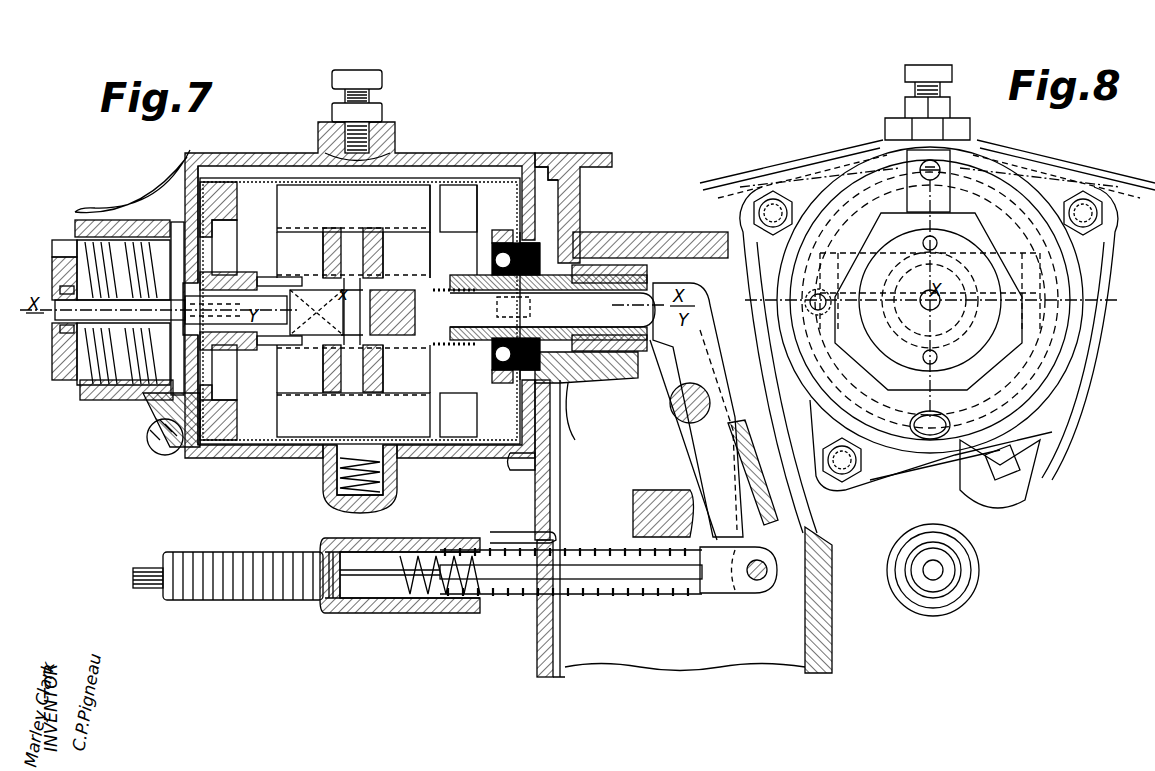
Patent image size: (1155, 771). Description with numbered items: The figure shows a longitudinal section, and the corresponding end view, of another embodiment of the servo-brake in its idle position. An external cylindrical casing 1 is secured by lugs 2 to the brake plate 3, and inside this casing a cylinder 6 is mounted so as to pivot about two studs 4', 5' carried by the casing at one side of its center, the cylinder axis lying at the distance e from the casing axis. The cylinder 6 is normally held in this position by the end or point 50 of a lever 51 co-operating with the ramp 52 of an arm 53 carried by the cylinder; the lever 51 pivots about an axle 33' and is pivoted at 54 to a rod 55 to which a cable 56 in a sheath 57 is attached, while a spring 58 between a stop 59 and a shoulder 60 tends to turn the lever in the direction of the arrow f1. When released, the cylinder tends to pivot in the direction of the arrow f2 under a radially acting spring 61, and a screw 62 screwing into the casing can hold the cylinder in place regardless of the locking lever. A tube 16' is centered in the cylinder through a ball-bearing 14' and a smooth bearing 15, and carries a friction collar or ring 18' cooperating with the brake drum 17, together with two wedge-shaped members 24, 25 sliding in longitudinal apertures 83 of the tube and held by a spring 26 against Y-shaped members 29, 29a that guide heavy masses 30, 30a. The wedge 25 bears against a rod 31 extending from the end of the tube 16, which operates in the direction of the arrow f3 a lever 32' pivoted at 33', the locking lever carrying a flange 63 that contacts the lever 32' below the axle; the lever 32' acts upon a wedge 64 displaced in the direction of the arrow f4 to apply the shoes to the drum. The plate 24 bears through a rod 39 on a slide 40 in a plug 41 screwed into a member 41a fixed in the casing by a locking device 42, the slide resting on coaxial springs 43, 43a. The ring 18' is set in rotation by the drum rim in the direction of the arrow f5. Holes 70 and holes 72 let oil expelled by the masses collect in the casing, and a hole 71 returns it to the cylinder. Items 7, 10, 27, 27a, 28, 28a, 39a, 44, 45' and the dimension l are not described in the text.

In FIG. 7, the external cylindrical casing 1 is at (453, 158).
In FIG. 8, the external cylindrical casing 1 is at (1086, 373).
In FIG. 7, the lugs 2 is at (517, 480).
In FIG. 8, the lugs 2 is at (882, 465).
In FIG. 7, the brake plate 3 is at (575, 160).
In FIG. 7, the stud 4' is at (120, 310).
In FIG. 7, the stud 5' is at (558, 310).
In FIG. 7, the cylinder 6 is at (422, 179).
In FIG. 8, the fitting 7 is at (966, 465).
In FIG. 7, the central rod 10 is at (351, 335).
In FIG. 7, the ball-bearing 14' is at (473, 410).
In FIG. 7, the bearing 15 is at (225, 288).
In FIG. 7, the tube 16 is at (236, 308).
In FIG. 7, the tube 16' is at (581, 241).
In FIG. 7, the brake drum 17 is at (673, 240).
In FIG. 8, the brake drum 17 is at (1007, 193).
In FIG. 7, the friction collar or ring 18' is at (614, 274).
In FIG. 8, the friction collar or ring 18' is at (958, 300).
In FIG. 7, the wedge-shaped member 24 is at (250, 318).
In FIG. 7, the wedge-shaped member 25 is at (542, 307).
In FIG. 7, the spring 26 is at (466, 330).
In FIG. 7, the crank block 27 is at (290, 290).
In FIG. 7, the lower crank block 27a is at (318, 330).
In FIG. 7, the guide block 28 is at (428, 272).
In FIG. 7, the lower guide block 28a is at (425, 360).
In FIG. 7, the Y-shaped member 29 is at (396, 205).
In FIG. 7, the Y-shaped member 29a is at (402, 418).
In FIG. 7, the heavy mass 30 is at (385, 373).
In FIG. 7, the heavy mass 30a is at (378, 247).
In FIG. 7, the rod 31 is at (496, 306).
In FIG. 7, the lever 32' is at (698, 410).
In FIG. 7, the axle 33' is at (690, 389).
In FIG. 7, the rod 39 is at (222, 338).
In FIG. 7, the guide 39a is at (454, 351).
In FIG. 7, the slide 40 is at (148, 400).
In FIG. 7, the plug 41 is at (55, 273).
In FIG. 8, the plug 41 is at (965, 352).
In FIG. 7, the member 41a is at (95, 222).
In FIG. 7, the locking device 42 is at (117, 208).
In FIG. 7, the spring 43 is at (88, 401).
In FIG. 7, the spring 43a is at (62, 316).
In FIG. 7, the lower cap block 44 is at (55, 338).
In FIG. 8, the lower cap block 44 is at (930, 307).
In FIG. 8, the bolt 45' is at (819, 320).
In FIG. 7, the end or point of lever 50 is at (640, 378).
In FIG. 7, the lever 51 is at (660, 440).
In FIG. 7, the ramp 52 is at (600, 378).
In FIG. 7, the arm 53 is at (583, 417).
In FIG. 7, the pivot 54 is at (760, 582).
In FIG. 7, the rod 55 is at (655, 580).
In FIG. 7, the cable 56 is at (412, 606).
In FIG. 7, the sheath 57 is at (275, 590).
In FIG. 7, the spring 58 is at (472, 600).
In FIG. 7, the stop 59 is at (400, 608).
In FIG. 7, the shoulder 60 is at (695, 582).
In FIG. 7, the spring 61 is at (345, 504).
In FIG. 7, the screw 62 is at (383, 128).
In FIG. 7, the flange 63 is at (760, 518).
In FIG. 7, the wedge 64 is at (650, 492).
In FIG. 8, the hole 70 is at (796, 304).
In FIG. 7, the hole 71 is at (426, 446).
In FIG. 8, the hole 71 is at (937, 369).
In FIG. 7, the holes 72 is at (165, 452).
In FIG. 7, the longitudinal aperture 83 is at (438, 280).
In FIG. 7, the arrow f1 is at (733, 477).
In FIG. 8, the arrow f2 is at (904, 303).
In FIG. 7, the arrow f3 is at (733, 350).
In FIG. 8, the arrow f4 is at (1080, 282).
In FIG. 8, the arrow f5 is at (935, 262).
In FIG. 8, the dimension l is at (822, 253).
In FIG. 8, the distance e is at (940, 300).